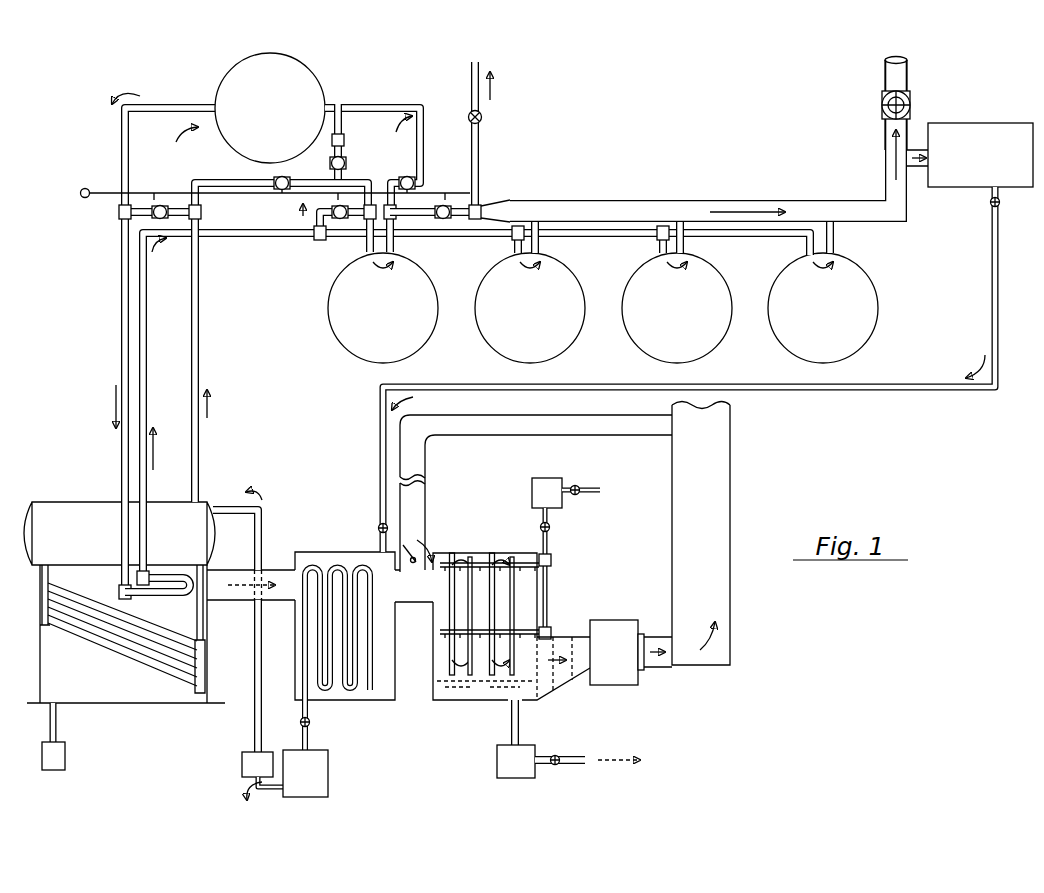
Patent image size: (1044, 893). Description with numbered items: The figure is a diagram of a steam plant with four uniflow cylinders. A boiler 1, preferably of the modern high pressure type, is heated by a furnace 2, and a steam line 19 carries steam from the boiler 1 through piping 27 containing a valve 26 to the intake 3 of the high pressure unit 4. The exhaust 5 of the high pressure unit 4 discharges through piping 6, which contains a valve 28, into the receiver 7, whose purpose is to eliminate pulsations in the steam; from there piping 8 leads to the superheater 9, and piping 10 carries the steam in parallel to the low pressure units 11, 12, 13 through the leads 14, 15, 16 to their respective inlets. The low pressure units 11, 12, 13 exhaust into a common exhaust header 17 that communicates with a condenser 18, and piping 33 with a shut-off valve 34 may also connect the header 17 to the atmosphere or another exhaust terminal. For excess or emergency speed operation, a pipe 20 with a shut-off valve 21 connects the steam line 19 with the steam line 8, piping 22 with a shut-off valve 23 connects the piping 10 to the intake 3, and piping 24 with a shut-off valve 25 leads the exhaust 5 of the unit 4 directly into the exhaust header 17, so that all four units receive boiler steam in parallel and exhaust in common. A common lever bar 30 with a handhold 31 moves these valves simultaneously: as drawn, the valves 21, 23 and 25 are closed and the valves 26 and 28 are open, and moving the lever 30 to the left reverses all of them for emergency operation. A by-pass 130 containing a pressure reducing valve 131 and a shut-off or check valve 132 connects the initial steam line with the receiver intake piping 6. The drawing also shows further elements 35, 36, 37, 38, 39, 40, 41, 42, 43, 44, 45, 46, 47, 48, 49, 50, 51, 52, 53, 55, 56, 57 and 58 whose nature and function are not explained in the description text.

The boiler 1 is at (119, 533).
The furnace 2 is at (126, 634).
The intake 3 is at (366, 240).
The high pressure unit 4 is at (383, 308).
The exhaust 5 is at (395, 242).
The piping 6 is at (422, 138).
The receiver 7 is at (270, 108).
The piping 8 is at (121, 303).
The superheater 9 is at (170, 585).
The piping 10 is at (262, 242).
The low pressure unit 11 is at (530, 308).
The low pressure unit 12 is at (677, 308).
The low pressure unit 13 is at (823, 308).
The lead 14 is at (512, 240).
The lead 15 is at (657, 240).
The lead 16 is at (805, 240).
The exhaust header 17 is at (648, 203).
The condenser 18 is at (970, 155).
The steam line 19 is at (203, 333).
The pipe 20 is at (201, 213).
The shut-off valve 21 is at (153, 215).
The piping 22 is at (338, 225).
The shut-off valve 23 is at (318, 245).
The piping 24 is at (425, 207).
The shut-off valve 25 is at (460, 207).
The valve 26 is at (282, 176).
The piping 27 is at (218, 178).
The valve 28 is at (407, 176).
The common lever bar 30 is at (92, 190).
The handhold 31 is at (80, 192).
The piping 33 is at (882, 78).
The shut-off valve 34 is at (882, 108).
The flue duct 35 is at (234, 600).
The heater casing 36 is at (333, 552).
The coil 37 is at (328, 636).
The duct 38 is at (413, 603).
The heating element 39 is at (491, 556).
The plate 40 is at (514, 600).
The tank 41 is at (462, 692).
The fitting 42 is at (552, 560).
The tray 43 is at (528, 634).
The supply box 44 is at (548, 478).
The drain box 45 is at (516, 739).
The drain pipe 46 is at (570, 760).
The channel 47 is at (556, 658).
The box 48 is at (640, 680).
The stack 49 is at (701, 534).
The pipe 50 is at (862, 392).
The pipe 51 is at (300, 738).
The box 52 is at (305, 773).
The box 53 is at (244, 770).
The duct 55 is at (420, 490).
The damper 56 is at (413, 550).
The tray 57 is at (446, 566).
The box 58 is at (66, 755).
The by-pass 130 is at (340, 126).
The pressure reducing valve 131 is at (346, 140).
The shut-off or check valve 132 is at (344, 163).